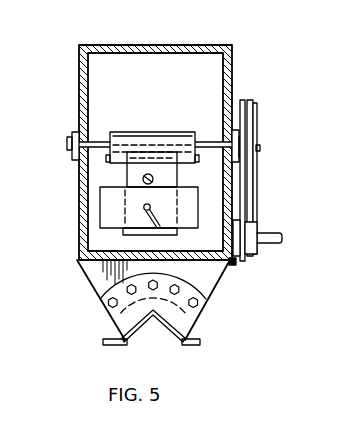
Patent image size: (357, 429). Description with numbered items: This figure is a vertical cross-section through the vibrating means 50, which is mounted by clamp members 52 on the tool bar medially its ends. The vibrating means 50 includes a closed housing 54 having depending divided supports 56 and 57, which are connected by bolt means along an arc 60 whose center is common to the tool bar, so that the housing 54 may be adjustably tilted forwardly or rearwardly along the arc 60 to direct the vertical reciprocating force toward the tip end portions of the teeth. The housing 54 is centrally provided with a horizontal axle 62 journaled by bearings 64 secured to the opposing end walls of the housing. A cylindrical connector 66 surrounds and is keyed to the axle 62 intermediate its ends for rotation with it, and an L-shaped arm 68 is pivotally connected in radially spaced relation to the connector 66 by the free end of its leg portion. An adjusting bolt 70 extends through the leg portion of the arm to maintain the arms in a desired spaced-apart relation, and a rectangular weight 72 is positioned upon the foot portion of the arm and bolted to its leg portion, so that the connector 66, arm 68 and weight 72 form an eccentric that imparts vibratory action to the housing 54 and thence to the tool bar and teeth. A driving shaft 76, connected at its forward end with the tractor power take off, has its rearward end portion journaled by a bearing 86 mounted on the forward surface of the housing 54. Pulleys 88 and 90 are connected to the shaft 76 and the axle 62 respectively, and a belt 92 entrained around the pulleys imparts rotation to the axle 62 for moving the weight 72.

The vibrating means 50 is at (76, 46).
The clamp members 52 is at (192, 346).
The closed housing 54 is at (140, 46).
The depending divided support 56 is at (93, 283).
The depending divided support 57 is at (192, 327).
The arc 60 is at (183, 282).
The horizontal axle 62 is at (261, 149).
The bearings 64 is at (72, 130).
The cylindrical connector 66 is at (143, 132).
The arm 68 is at (177, 172).
The adjusting bolt 70 is at (141, 178).
The weight 72 is at (181, 231).
The driving shaft 76 is at (277, 244).
The bearing 86 is at (234, 265).
The pulley 88 is at (257, 223).
The pulley 90 is at (257, 113).
The belt 92 is at (250, 205).